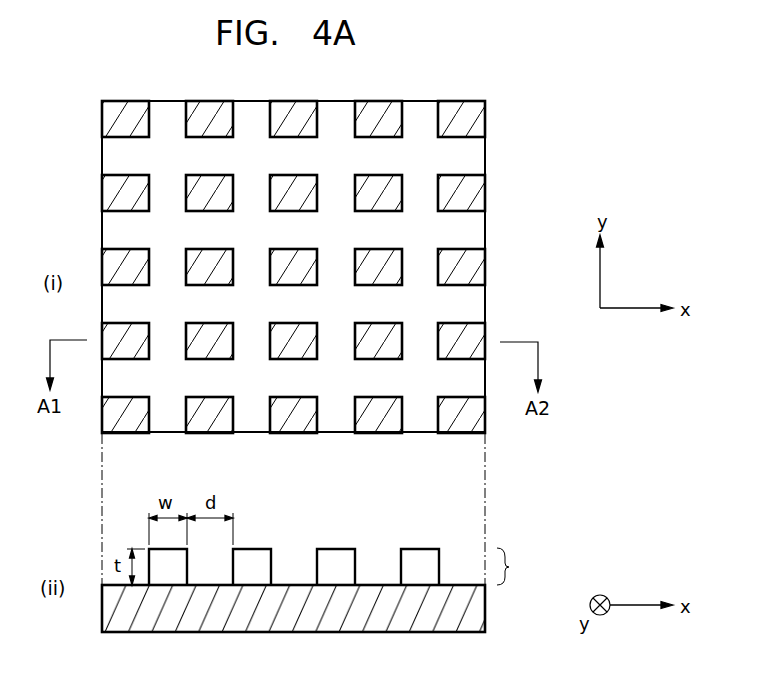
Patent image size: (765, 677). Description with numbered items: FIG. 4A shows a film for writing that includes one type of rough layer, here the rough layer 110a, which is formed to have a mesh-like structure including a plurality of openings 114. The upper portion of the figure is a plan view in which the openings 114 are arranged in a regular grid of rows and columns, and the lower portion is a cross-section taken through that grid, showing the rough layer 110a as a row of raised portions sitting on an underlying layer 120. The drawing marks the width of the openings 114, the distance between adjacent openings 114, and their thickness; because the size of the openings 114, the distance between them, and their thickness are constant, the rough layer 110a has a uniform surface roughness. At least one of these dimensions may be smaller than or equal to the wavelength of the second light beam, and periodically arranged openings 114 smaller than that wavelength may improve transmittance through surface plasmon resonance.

The openings 114 is at (375, 197).
The rough layer 110a is at (528, 566).
The substrate 120 is at (485, 611).